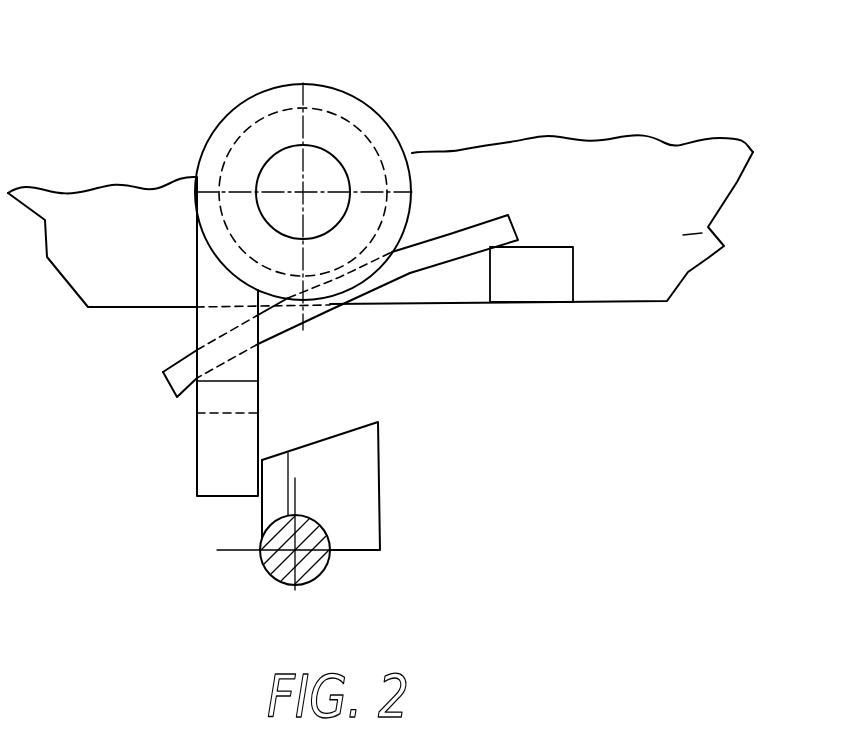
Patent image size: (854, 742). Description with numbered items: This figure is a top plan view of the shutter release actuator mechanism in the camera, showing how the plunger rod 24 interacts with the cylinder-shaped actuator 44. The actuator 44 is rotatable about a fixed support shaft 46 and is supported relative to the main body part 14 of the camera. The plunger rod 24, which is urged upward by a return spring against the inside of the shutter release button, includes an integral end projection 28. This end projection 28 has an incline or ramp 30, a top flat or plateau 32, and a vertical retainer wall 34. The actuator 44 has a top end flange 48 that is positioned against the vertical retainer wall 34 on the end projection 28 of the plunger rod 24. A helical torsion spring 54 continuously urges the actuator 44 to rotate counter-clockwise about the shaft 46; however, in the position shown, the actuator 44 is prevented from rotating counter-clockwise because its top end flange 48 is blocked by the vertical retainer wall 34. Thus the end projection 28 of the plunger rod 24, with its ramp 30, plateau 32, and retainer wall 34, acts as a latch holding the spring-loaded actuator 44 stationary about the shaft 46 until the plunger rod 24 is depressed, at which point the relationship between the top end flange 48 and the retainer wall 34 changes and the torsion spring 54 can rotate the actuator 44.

The main body part 14 is at (708, 240).
The plunger rod 24 is at (336, 590).
The end projection 28 is at (323, 503).
The incline 30 is at (370, 467).
The top flat 32 is at (270, 455).
The vertical retainer wall 34 is at (258, 512).
The actuator 44 is at (355, 90).
The fixed support shaft 46 is at (287, 165).
The top end flange 48 is at (197, 455).
The helical torsion spring 54 is at (462, 227).